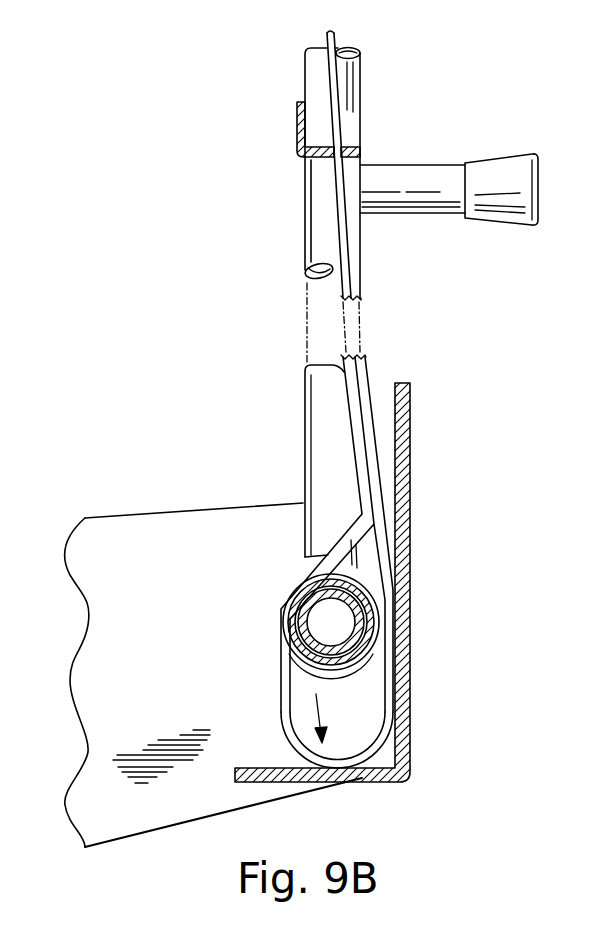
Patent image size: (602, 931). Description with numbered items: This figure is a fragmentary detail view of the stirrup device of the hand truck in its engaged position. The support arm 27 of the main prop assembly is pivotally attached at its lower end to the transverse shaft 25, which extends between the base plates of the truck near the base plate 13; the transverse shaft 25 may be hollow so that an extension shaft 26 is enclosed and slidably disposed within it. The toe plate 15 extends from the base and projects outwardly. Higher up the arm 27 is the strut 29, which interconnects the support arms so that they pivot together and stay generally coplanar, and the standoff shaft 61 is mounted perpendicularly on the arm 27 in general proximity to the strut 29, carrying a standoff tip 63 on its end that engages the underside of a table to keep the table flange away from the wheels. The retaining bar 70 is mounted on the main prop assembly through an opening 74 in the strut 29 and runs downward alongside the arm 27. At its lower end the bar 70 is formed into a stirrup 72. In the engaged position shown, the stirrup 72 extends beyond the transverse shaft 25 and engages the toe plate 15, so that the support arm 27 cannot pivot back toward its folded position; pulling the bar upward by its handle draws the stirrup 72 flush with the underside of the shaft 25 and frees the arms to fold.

The base plate 13 is at (181, 584).
The toe plate 15 is at (411, 413).
The transverse shaft 25 is at (305, 668).
The extension shaft 26 is at (306, 588).
The support arm 27 is at (305, 233).
The strut 29 is at (297, 130).
The standoff shaft 61 is at (387, 214).
The standoff tip 63 is at (540, 206).
The retaining bar 70 is at (325, 77).
The stirrup 72 is at (275, 610).
The opening 74 is at (347, 133).